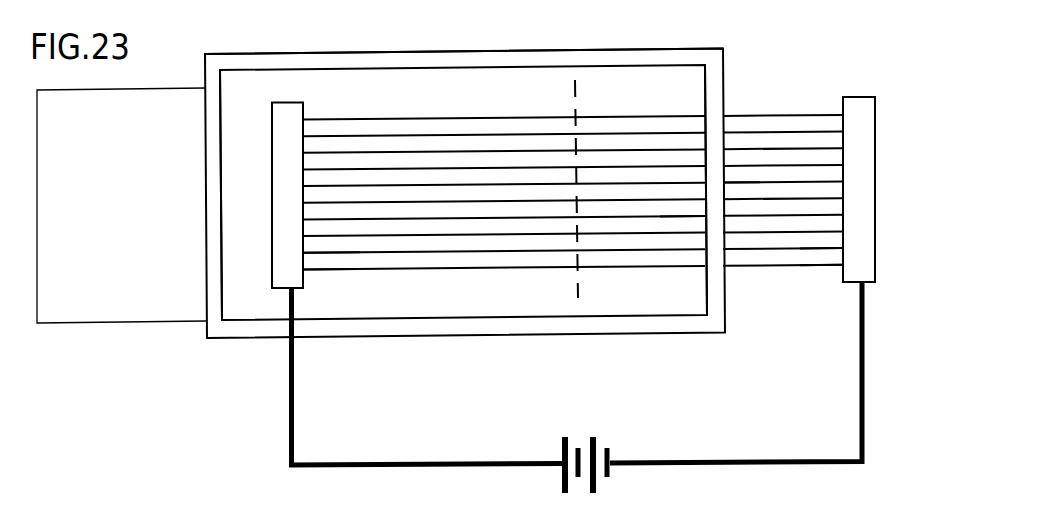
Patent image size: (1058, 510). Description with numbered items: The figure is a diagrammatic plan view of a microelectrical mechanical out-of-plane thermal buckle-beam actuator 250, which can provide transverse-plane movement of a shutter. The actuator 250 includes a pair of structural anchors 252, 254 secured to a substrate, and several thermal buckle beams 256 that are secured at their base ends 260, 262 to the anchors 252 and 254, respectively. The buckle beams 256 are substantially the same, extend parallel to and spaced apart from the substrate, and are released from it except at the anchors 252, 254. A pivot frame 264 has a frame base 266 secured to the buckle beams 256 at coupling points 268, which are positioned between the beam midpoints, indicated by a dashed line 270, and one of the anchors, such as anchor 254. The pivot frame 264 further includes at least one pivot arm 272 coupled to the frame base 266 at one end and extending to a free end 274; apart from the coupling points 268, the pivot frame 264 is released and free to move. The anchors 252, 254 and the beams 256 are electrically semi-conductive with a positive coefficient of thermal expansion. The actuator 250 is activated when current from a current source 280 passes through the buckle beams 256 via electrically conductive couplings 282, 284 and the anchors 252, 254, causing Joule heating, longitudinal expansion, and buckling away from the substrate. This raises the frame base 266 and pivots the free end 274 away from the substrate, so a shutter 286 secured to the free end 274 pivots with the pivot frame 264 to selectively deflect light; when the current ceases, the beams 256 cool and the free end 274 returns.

The out-of-plane thermal buckle-beam actuator 250 is at (203, 392).
The structural anchor 252 is at (285, 102).
The structural anchor 254 is at (857, 96).
The thermal buckle beams 256 is at (513, 232).
The base ends 260 is at (322, 252).
The base ends 262 is at (835, 250).
The pivot frame 264 is at (687, 339).
The frame base 266 is at (710, 98).
The coupling points 268 is at (728, 183).
The dashed line 270 is at (570, 98).
The pivot arm 272 is at (508, 54).
The free end 274 is at (270, 102).
The current source 280 is at (576, 440).
The electrically conductive coupling 282 is at (445, 460).
The electrically conductive coupling 284 is at (737, 458).
The shutter 286 is at (156, 204).